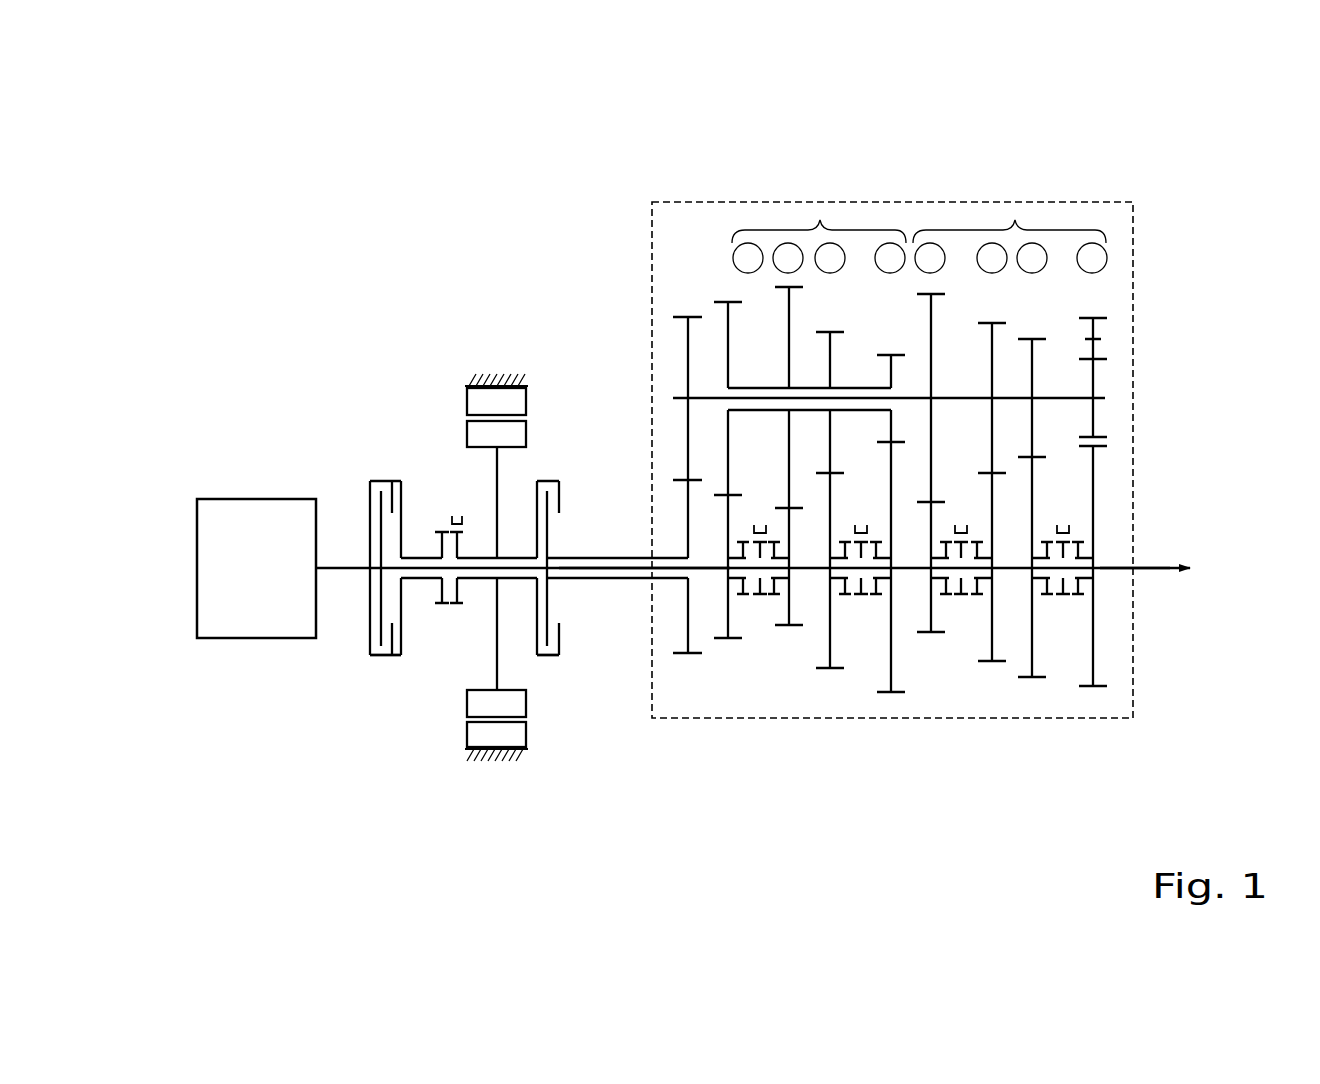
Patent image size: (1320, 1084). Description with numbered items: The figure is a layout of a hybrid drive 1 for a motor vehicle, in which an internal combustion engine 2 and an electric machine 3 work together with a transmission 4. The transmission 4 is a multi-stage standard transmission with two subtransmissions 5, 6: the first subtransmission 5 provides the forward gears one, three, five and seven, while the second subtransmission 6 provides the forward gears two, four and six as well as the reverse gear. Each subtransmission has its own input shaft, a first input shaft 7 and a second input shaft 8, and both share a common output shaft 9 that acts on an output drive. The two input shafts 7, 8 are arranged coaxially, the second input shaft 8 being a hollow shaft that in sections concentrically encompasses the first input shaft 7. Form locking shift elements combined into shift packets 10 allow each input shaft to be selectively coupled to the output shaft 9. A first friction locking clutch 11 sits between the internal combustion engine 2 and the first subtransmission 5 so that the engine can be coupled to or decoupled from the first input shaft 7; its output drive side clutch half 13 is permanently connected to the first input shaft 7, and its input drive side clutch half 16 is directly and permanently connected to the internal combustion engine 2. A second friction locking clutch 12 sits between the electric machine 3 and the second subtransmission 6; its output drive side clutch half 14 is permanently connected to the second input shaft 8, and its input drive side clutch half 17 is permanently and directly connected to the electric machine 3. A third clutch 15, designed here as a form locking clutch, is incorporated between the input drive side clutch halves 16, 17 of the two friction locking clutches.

The hybrid drive 1 is at (203, 256).
The internal combustion engine 2 is at (250, 612).
The electric machine 3 is at (497, 363).
The transmission 4 is at (1134, 216).
The first subtransmission 5 is at (820, 220).
The second subtransmission 6 is at (1015, 220).
The first input shaft 7 is at (663, 572).
The second input shaft 8 is at (597, 580).
The output shaft 9 is at (1160, 580).
The shift packets 10 is at (760, 602).
The first friction locking clutch 11 is at (383, 472).
The second friction locking clutch 12 is at (547, 472).
The output drive side clutch half of the first friction locking clutch 13 is at (382, 526).
The output drive side clutch half of the second friction locking clutch 14 is at (549, 534).
The third clutch 15 is at (445, 506).
The input drive side clutch half of the first friction locking clutch 16 is at (402, 645).
The input drive side clutch half of the second friction locking clutch 17 is at (537, 620).